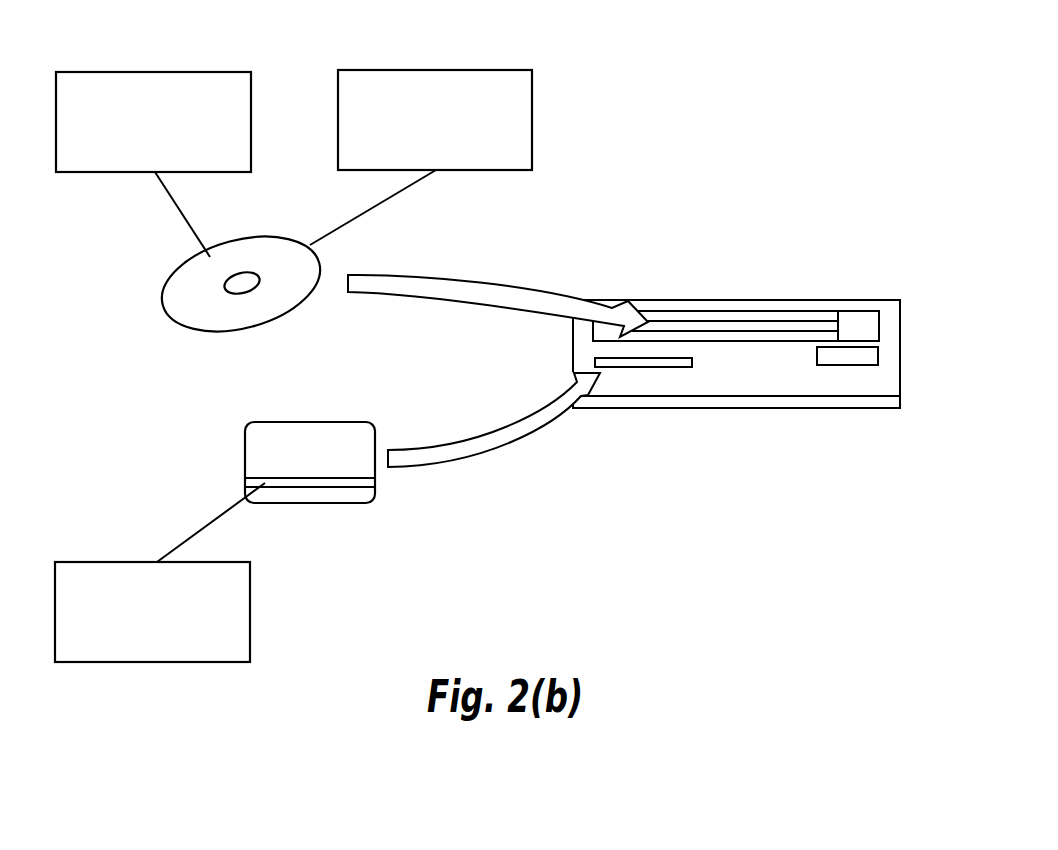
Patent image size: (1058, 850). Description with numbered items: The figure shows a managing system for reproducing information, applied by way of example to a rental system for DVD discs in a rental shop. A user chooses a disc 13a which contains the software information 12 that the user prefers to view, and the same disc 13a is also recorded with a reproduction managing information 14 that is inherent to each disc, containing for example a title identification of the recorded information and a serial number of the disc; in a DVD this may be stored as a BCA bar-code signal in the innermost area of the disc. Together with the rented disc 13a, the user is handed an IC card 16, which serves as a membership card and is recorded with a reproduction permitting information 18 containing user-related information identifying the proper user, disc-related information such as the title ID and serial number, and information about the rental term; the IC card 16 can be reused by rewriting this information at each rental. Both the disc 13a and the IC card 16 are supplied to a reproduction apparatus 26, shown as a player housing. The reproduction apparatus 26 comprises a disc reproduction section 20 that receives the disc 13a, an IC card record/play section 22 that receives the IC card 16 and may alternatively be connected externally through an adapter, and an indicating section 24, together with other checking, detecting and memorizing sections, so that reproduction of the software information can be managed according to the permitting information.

The software information 12 is at (154, 72).
The reproduction managing information 14 is at (436, 70).
The disc 13a is at (163, 308).
The IC card 16 is at (310, 422).
The reproduction permitting information 18 is at (155, 664).
The disc reproduction section 20 is at (790, 323).
The IC card record/play section 22 is at (658, 367).
The indicating section 24 is at (878, 356).
The reproduction apparatus 26 is at (832, 408).